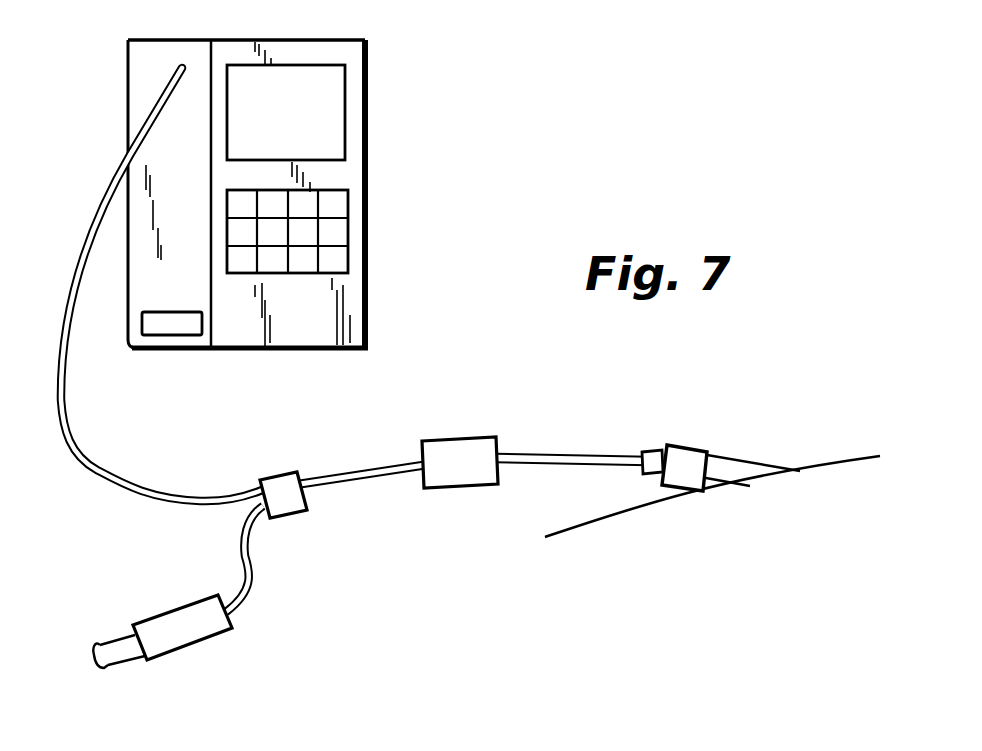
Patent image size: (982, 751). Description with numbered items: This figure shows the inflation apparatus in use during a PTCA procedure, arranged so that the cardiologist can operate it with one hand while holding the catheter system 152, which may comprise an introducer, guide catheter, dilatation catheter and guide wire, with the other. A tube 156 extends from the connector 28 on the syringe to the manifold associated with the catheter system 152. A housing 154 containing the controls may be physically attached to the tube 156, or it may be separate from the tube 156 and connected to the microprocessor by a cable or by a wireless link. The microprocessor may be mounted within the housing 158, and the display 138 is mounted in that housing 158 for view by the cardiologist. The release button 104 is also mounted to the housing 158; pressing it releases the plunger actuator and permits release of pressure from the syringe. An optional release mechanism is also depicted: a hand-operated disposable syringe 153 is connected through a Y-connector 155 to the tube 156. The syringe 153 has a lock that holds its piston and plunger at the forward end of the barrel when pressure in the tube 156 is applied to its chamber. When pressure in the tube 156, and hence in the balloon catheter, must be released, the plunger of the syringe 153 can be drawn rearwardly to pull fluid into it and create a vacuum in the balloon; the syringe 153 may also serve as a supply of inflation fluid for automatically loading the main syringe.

The connector 28 is at (163, 80).
The release button 104 is at (163, 332).
The display 138 is at (345, 90).
The housing 158 is at (368, 220).
The catheter system 152 is at (690, 442).
The hand-operated disposable syringe 153 is at (203, 641).
The housing 154 is at (433, 440).
The Y-connector 155 is at (263, 470).
The tube 156 is at (597, 450).